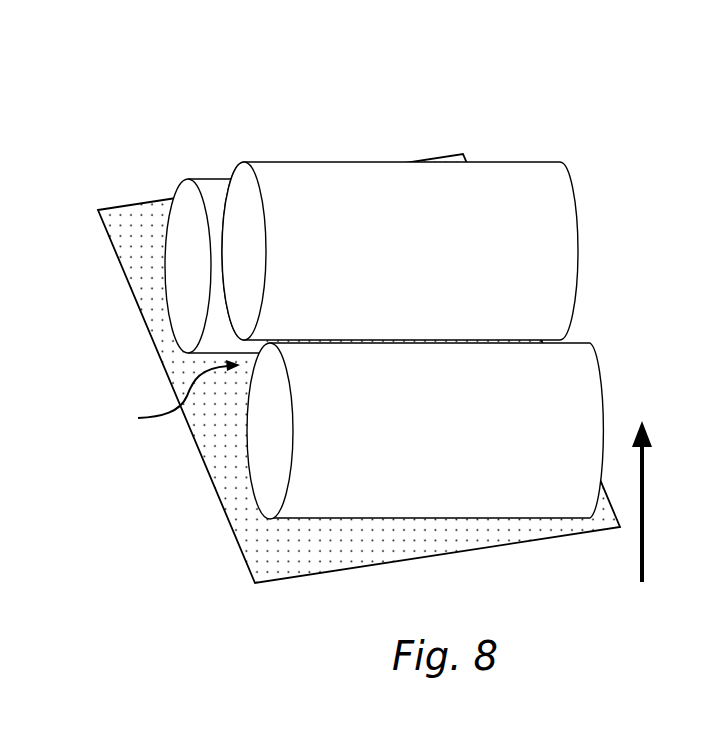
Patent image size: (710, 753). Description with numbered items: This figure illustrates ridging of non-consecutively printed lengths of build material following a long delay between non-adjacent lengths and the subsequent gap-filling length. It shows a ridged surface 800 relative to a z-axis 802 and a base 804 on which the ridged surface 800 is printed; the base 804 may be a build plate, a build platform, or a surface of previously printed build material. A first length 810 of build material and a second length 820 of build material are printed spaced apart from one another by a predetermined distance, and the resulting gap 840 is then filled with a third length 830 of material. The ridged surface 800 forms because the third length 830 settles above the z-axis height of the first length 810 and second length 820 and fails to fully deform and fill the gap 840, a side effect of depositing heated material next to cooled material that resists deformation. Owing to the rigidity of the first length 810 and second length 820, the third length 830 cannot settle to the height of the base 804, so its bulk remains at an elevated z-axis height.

The ridged surface 800 is at (379, 309).
The z-axis 802 is at (638, 568).
The base 804 is at (250, 556).
The first length 810 is at (186, 191).
The second length 820 is at (588, 357).
The third length 830 is at (561, 191).
The gap 840 is at (166, 395).